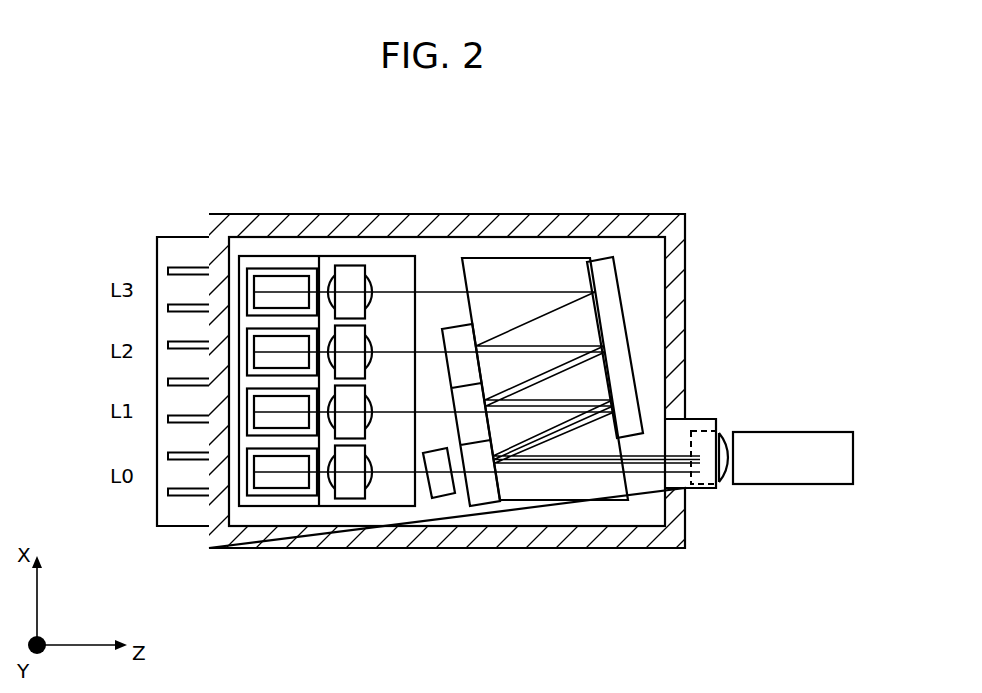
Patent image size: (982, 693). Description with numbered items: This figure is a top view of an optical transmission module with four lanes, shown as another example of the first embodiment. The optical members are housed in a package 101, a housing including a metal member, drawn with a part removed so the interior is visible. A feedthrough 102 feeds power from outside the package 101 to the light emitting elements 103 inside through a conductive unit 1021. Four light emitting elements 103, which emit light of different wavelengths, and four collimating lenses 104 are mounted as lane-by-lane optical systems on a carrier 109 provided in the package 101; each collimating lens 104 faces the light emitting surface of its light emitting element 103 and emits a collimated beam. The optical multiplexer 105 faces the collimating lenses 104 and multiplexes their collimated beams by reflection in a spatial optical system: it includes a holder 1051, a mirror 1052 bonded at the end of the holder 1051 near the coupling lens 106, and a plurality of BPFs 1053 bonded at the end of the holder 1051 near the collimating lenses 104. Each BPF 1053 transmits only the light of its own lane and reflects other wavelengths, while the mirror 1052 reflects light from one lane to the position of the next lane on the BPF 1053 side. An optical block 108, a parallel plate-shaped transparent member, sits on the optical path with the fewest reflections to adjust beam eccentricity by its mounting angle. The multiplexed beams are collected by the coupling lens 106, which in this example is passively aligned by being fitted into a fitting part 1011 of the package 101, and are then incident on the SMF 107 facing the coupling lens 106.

The package 101 is at (595, 550).
The fitting part 1011 is at (697, 418).
The feedthrough 102 is at (157, 243).
The conductive unit 1021 is at (182, 496).
The light emitting element 103 is at (287, 275).
The collimating lens 104 is at (350, 270).
The optical multiplexer 105 is at (528, 309).
The holder 1051 is at (523, 265).
The mirror 1052 is at (602, 260).
The BPF 1053 is at (458, 336).
The coupling lens 106 is at (716, 486).
The SMF 107 is at (807, 438).
The optical block 108 is at (443, 498).
The carrier 109 is at (252, 257).